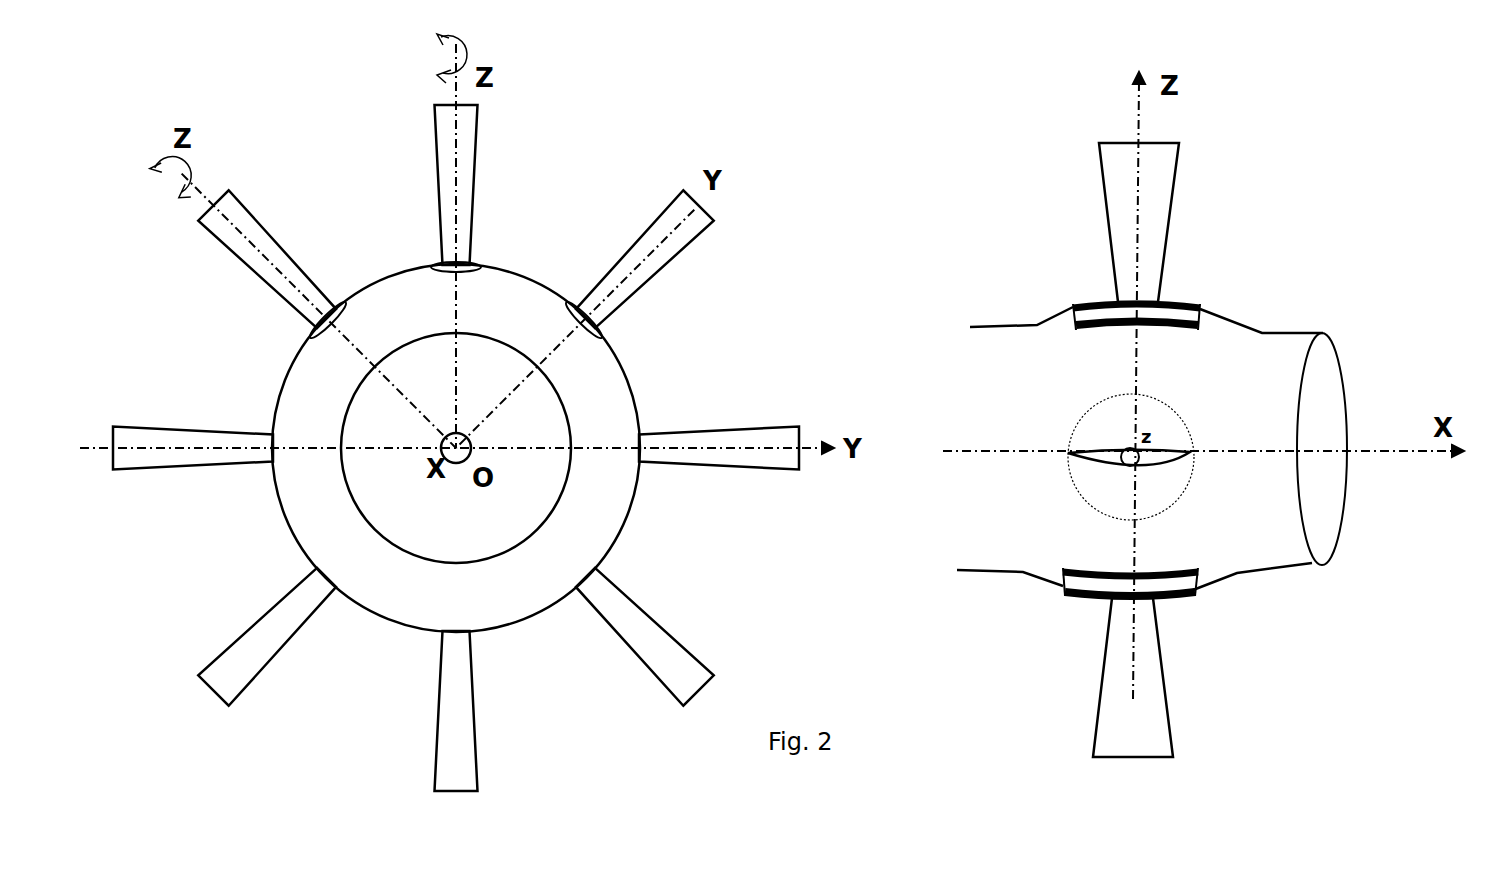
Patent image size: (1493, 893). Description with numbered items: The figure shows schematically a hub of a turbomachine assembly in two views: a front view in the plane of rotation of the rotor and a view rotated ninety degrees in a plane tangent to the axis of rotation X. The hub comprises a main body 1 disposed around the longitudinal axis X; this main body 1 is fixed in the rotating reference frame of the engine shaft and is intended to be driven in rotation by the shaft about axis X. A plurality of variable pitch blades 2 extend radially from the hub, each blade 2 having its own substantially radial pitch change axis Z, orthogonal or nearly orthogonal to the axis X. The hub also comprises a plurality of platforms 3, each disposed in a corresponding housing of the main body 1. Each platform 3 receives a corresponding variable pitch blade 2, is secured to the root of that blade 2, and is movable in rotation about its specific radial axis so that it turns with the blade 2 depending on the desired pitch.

The main body 1 is at (610, 395).
The variable pitch blade 2 is at (472, 140).
The platform 3 is at (480, 268).